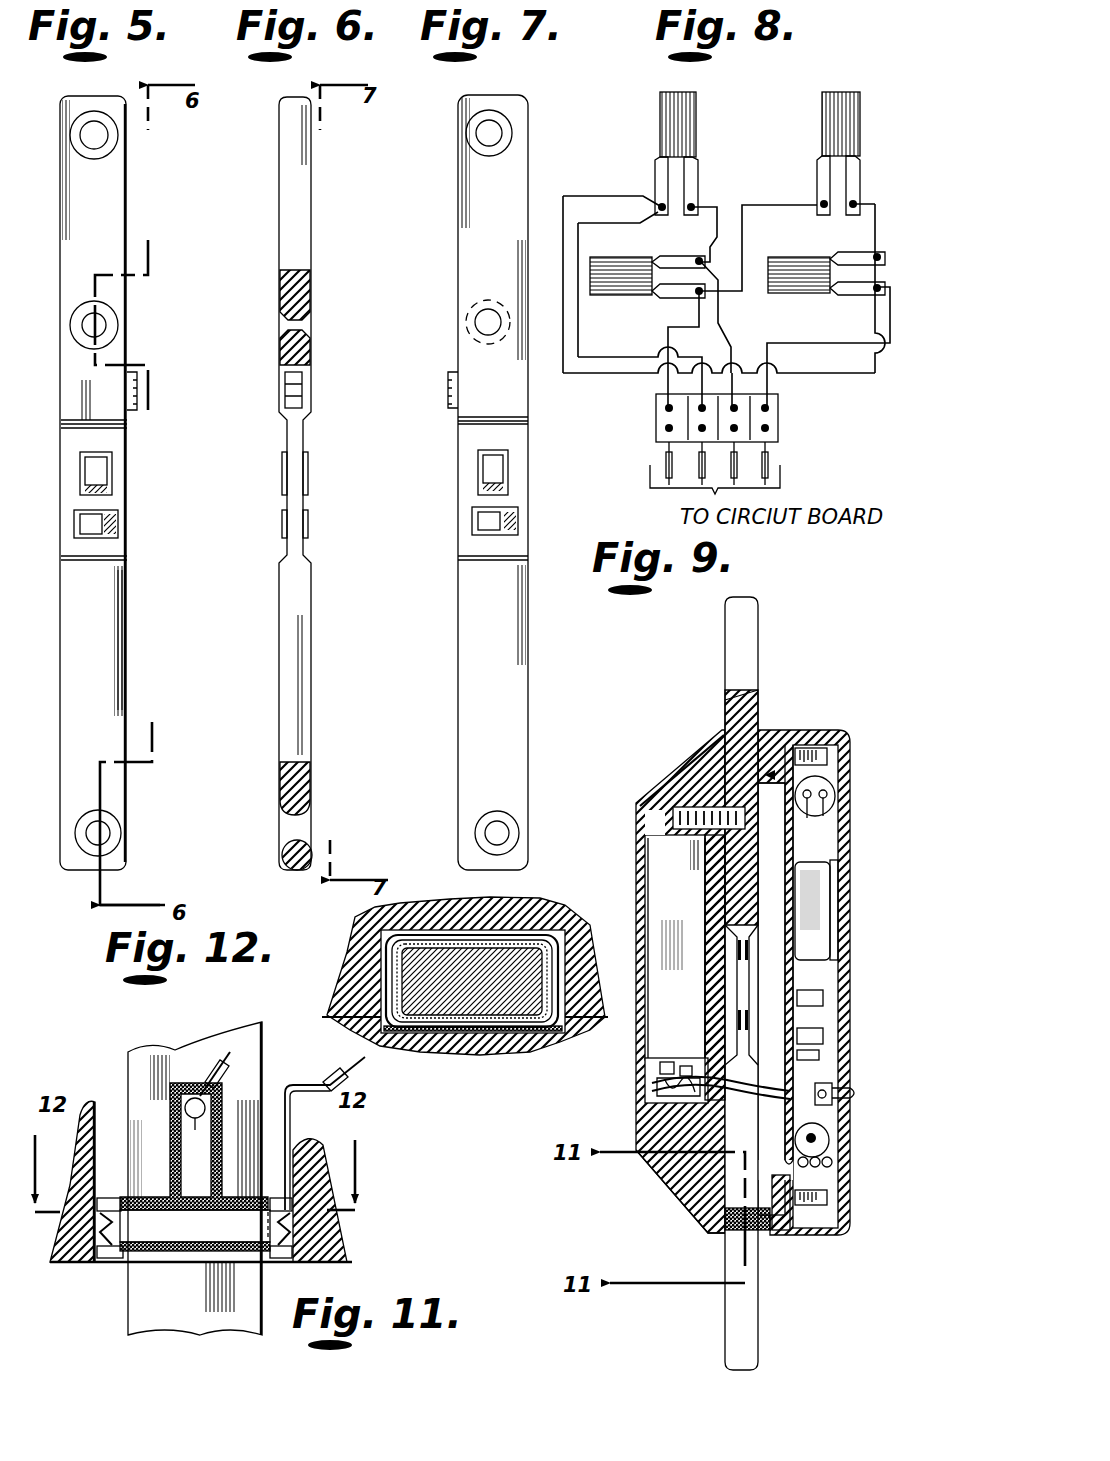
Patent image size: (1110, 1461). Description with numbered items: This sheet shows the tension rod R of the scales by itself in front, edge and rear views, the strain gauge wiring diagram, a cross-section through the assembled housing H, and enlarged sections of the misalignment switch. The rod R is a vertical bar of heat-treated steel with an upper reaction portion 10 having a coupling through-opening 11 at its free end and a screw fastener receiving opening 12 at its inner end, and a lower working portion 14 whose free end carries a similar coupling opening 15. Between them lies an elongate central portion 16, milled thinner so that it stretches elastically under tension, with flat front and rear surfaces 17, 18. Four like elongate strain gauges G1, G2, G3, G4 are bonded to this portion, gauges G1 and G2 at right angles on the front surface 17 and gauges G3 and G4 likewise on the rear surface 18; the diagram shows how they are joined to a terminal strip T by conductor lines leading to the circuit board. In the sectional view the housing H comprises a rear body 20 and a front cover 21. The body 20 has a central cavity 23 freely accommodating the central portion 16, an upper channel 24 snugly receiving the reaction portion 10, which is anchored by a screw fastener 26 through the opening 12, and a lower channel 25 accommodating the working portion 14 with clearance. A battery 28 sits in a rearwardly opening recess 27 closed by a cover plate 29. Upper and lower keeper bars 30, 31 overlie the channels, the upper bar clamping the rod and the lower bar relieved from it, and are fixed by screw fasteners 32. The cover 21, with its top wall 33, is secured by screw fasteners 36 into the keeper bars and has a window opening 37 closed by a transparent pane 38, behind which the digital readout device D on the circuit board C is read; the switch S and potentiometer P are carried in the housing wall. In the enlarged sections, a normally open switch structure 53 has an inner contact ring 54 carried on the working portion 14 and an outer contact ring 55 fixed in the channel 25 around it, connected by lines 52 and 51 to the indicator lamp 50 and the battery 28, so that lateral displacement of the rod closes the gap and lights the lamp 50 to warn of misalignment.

In FIG. 5, the upper reaction portion 10 is at (85, 208).
In FIG. 6, the upper reaction portion 10 is at (300, 190).
In FIG. 7, the upper reaction portion 10 is at (482, 185).
In FIG. 9, the upper reaction portion 10 is at (745, 600).
In FIG. 5, the through-opening 11 is at (99, 143).
In FIG. 7, the through-opening 11 is at (495, 130).
In FIG. 5, the screw fastener receiving opening 12 is at (77, 324).
In FIG. 6, the screw fastener receiving opening 12 is at (305, 325).
In FIG. 7, the screw fastener receiving opening 12 is at (478, 322).
In FIG. 5, the lower working portion 14 is at (108, 612).
In FIG. 6, the lower working portion 14 is at (300, 637).
In FIG. 7, the lower working portion 14 is at (470, 684).
In FIG. 9, the lower working portion 14 is at (730, 1320).
In FIG. 12, the lower working portion 14 is at (152, 1052).
In FIG. 5, the opening 15 is at (103, 838).
In FIG. 6, the opening 15 is at (305, 808).
In FIG. 7, the opening 15 is at (480, 830).
In FIG. 5, the central portion 16 is at (125, 433).
In FIG. 6, the central portion 16 is at (288, 552).
In FIG. 7, the central portion 16 is at (510, 478).
In FIG. 5, the front surface 17 is at (88, 440).
In FIG. 6, the front surface 17 is at (290, 433).
In FIG. 6, the rear surface 18 is at (303, 435).
In FIG. 7, the rear surface 18 is at (508, 436).
In FIG. 9, the body 20 is at (698, 748).
In FIG. 12, the body 20 is at (347, 1230).
In FIG. 9, the cover 21 is at (848, 760).
In FIG. 9, the cavity 23 is at (718, 905).
In FIG. 9, the upper channel 24 is at (733, 712).
In FIG. 9, the lower channel 25 is at (725, 1178).
In FIG. 11, the lower channel 25 is at (550, 958).
In FIG. 12, the lower channel 25 is at (275, 1152).
In FIG. 9, the screw fastener 26 is at (700, 808).
In FIG. 9, the battery-receiving recess 27 is at (705, 882).
In FIG. 9, the battery 28 is at (652, 857).
In FIG. 9, the cover plate 29 is at (637, 915).
In FIG. 11, the cover plate 29 is at (612, 926).
In FIG. 9, the upper keeper bar 30 is at (786, 740).
In FIG. 9, the lower keeper bar 31 is at (775, 1240).
In FIG. 11, the lower keeper bar 31 is at (520, 1057).
In FIG. 9, the screw fasteners 32 is at (850, 742).
In FIG. 9, the top wall 33 is at (805, 730).
In FIG. 9, the screw fasteners 36 is at (818, 752).
In FIG. 9, the window opening 37 is at (838, 866).
In FIG. 9, the transparent pane 38 is at (838, 895).
In FIG. 9, the indicator lamp 50 is at (848, 1090).
In FIG. 9, the line 51 is at (790, 1090).
In FIG. 12, the line 51 is at (343, 1068).
In FIG. 9, the line 52 is at (790, 1080).
In FIG. 12, the line 52 is at (208, 1058).
In FIG. 9, the switch structure 53 is at (722, 1222).
In FIG. 11, the switch structure 53 is at (475, 1045).
In FIG. 12, the switch structure 53 is at (108, 1264).
In FIG. 11, the inner contact ring 54 is at (505, 948).
In FIG. 12, the inner contact ring 54 is at (195, 1236).
In FIG. 11, the outer contact ring 55 is at (470, 936).
In FIG. 12, the outer contact ring 55 is at (120, 1225).
In FIG. 5, the tension rod R is at (127, 100).
In FIG. 6, the tension rod R is at (280, 640).
In FIG. 7, the tension rod R is at (530, 690).
In FIG. 9, the tension rod R is at (766, 1337).
In FIG. 12, the tension rod R is at (130, 1052).
In FIG. 9, the housing H is at (636, 797).
In FIG. 12, the housing H is at (350, 1250).
In FIG. 5, the terminal T is at (137, 408).
In FIG. 6, the terminal T is at (303, 388).
In FIG. 7, the terminal T is at (455, 385).
In FIG. 8, the terminal T is at (780, 418).
In FIG. 9, the on and off switch unit S is at (832, 792).
In FIG. 9, the liquid crystal digital readout device D is at (832, 930).
In FIG. 9, the circuit board C is at (805, 985).
In FIG. 9, the potentiometer P is at (835, 1146).
In FIG. 5, the strain gauge G1 is at (112, 470).
In FIG. 6, the strain gauge G1 is at (308, 462).
In FIG. 8, the strain gauge G1 is at (690, 118).
In FIG. 5, the strain gauge G2 is at (118, 520).
In FIG. 6, the strain gauge G2 is at (308, 520).
In FIG. 8, the strain gauge G2 is at (818, 133).
In FIG. 6, the strain gauge G3 is at (282, 470).
In FIG. 7, the strain gauge G3 is at (478, 465).
In FIG. 8, the strain gauge G3 is at (612, 298).
In FIG. 6, the strain gauge G4 is at (282, 525).
In FIG. 7, the strain gauge G4 is at (472, 522).
In FIG. 8, the strain gauge G4 is at (787, 298).